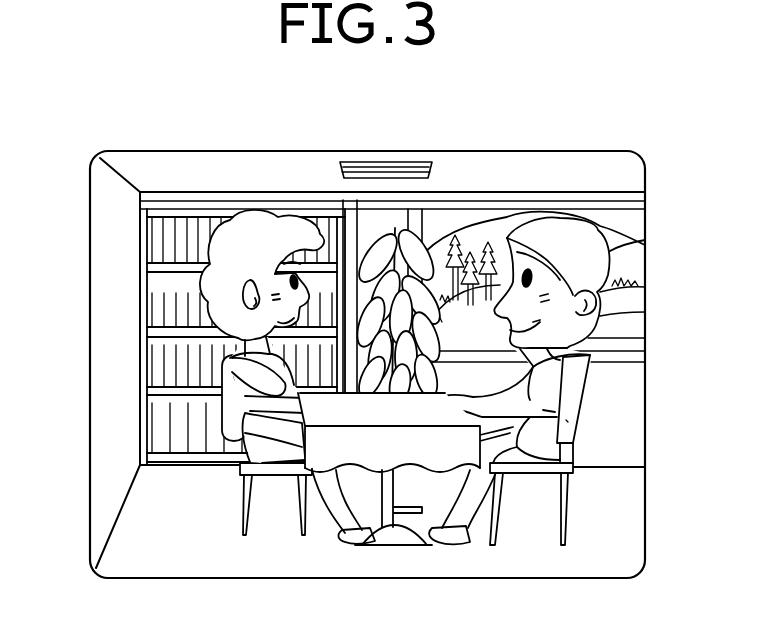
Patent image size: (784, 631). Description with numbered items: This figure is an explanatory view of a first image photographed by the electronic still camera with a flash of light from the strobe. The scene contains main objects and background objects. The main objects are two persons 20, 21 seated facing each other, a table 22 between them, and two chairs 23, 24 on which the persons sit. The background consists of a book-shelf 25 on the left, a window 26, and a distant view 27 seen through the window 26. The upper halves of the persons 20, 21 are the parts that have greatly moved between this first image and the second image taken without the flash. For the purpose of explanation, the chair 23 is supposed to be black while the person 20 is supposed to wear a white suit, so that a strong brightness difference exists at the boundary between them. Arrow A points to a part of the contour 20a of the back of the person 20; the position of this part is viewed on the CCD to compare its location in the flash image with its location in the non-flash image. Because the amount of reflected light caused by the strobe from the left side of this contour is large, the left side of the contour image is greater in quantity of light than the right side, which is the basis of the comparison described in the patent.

The book-shelf 25 is at (200, 222).
The window 26 is at (415, 200).
The person 21 is at (233, 258).
The distant view 27 is at (625, 250).
The chair 23 is at (592, 352).
The contour of the back of the person 20a is at (597, 366).
The person 20 is at (560, 417).
The arrow A is at (577, 424).
The chair 24 is at (237, 408).
The table 22 is at (297, 465).